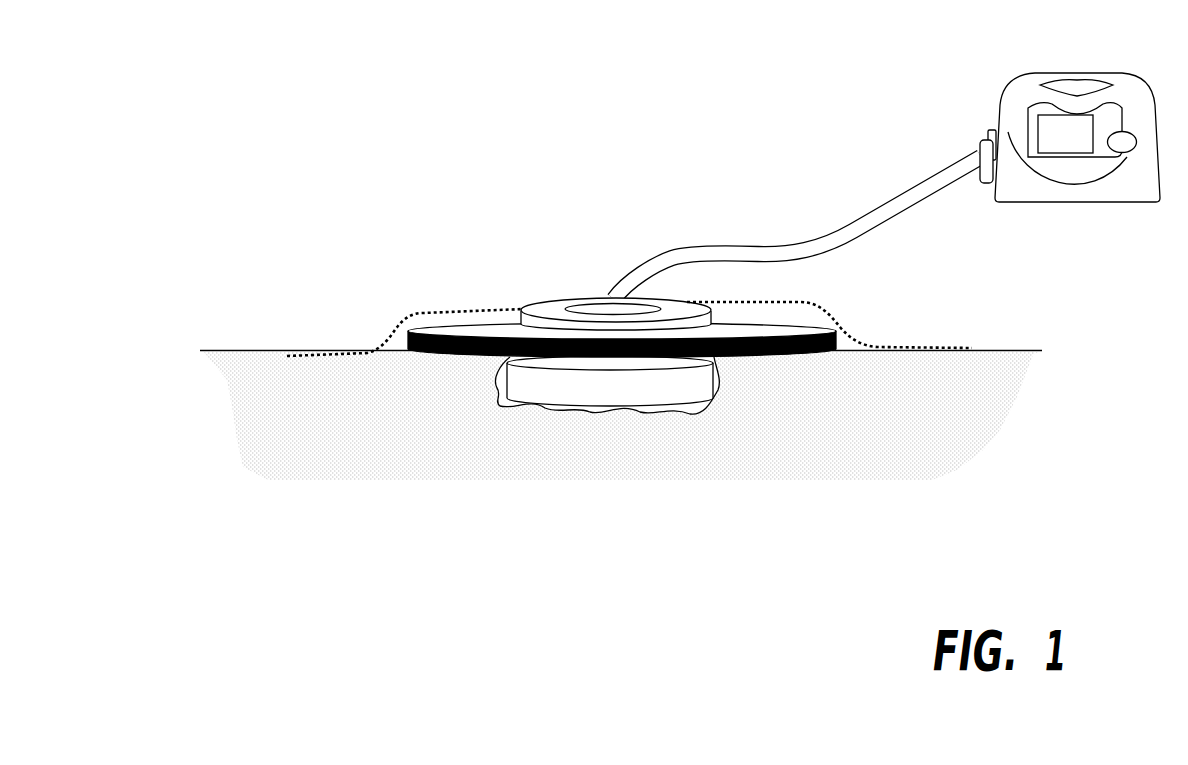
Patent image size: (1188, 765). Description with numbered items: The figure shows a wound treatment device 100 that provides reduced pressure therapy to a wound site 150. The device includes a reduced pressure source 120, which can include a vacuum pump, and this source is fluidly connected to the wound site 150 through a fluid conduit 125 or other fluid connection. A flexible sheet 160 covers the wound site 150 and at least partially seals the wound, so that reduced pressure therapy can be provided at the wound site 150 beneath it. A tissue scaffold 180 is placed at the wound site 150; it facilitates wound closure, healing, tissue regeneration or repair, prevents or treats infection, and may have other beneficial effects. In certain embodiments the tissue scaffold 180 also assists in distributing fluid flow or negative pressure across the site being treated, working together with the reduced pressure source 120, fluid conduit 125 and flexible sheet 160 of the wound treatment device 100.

The wound treatment device 100 is at (519, 138).
The reduced pressure source 120 is at (975, 78).
The fluid conduit 125 is at (880, 178).
The wound site 150 is at (460, 468).
The flexible sheet 160 is at (378, 306).
The tissue scaffold 180 is at (630, 398).